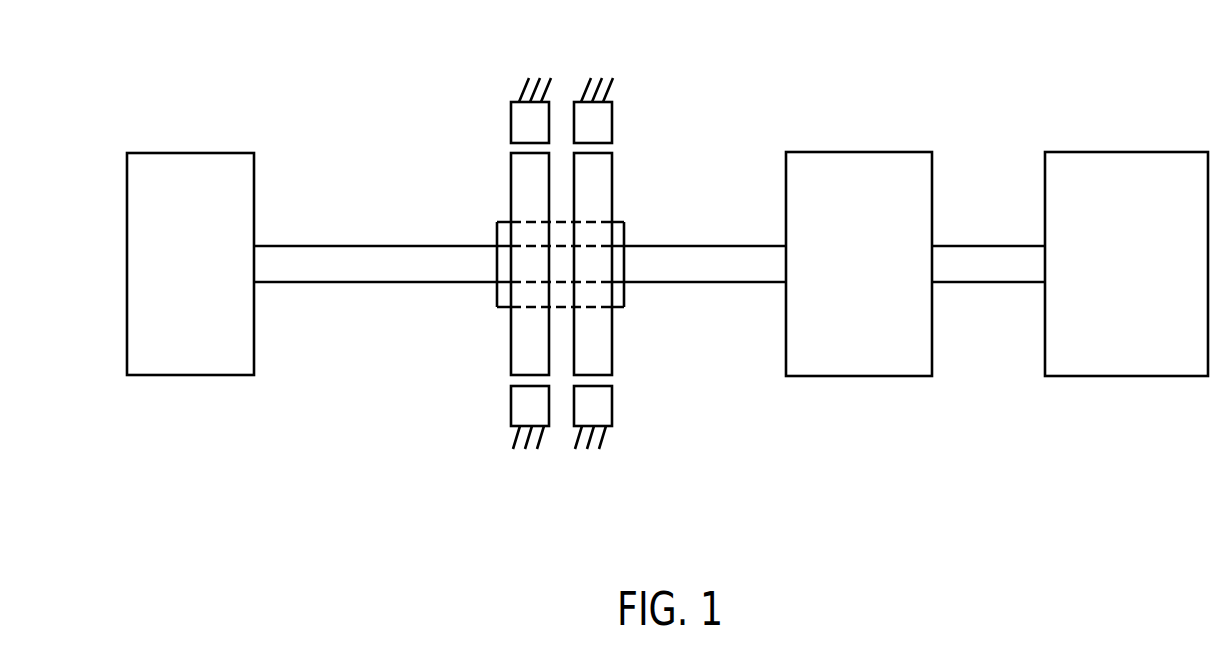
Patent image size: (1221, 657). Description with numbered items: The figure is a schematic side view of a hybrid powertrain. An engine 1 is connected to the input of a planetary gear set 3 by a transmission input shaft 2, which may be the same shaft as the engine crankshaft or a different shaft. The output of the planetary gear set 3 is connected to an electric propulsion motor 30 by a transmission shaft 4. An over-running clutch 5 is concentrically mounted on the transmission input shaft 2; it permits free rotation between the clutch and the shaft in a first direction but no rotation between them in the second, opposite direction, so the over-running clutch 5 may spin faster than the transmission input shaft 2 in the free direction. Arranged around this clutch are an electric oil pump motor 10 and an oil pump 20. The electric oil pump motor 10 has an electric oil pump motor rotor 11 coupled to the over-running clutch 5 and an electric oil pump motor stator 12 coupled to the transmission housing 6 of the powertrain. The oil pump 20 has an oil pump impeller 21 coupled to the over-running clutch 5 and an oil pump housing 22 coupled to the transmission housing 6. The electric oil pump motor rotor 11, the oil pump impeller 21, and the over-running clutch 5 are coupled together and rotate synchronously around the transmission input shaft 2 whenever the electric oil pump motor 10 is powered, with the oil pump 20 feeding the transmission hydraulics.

The engine 1 is at (190, 153).
The transmission input shaft 2 is at (372, 246).
The planetary gear set 3 is at (858, 152).
The transmission shaft 4 is at (992, 246).
The over-running clutch 5 is at (497, 301).
The transmission housing 6 is at (533, 67).
The electric oil pump motor 10 is at (501, 255).
The electric oil pump motor rotor 11 is at (511, 187).
The electric oil pump motor stator 12 is at (511, 143).
The oil pump 20 is at (621, 255).
The oil pump impeller 21 is at (612, 187).
The oil pump housing 22 is at (612, 143).
The electric propulsion motor 30 is at (1122, 152).